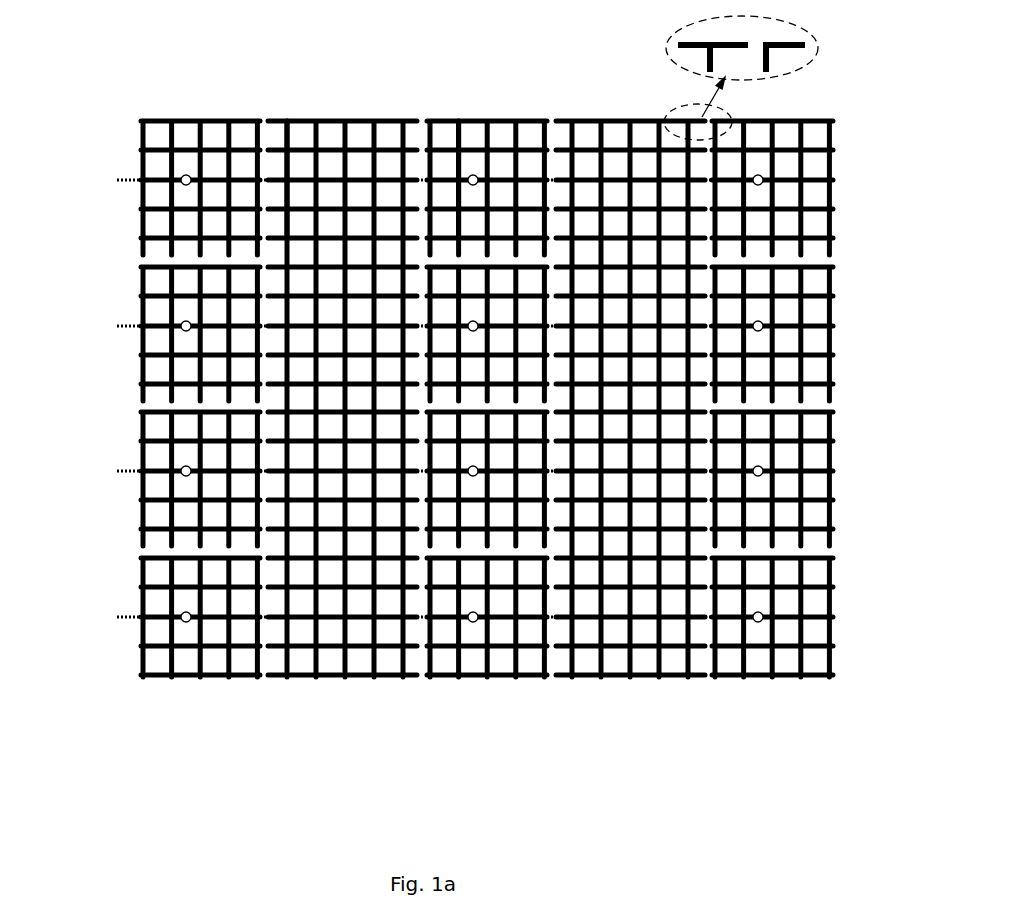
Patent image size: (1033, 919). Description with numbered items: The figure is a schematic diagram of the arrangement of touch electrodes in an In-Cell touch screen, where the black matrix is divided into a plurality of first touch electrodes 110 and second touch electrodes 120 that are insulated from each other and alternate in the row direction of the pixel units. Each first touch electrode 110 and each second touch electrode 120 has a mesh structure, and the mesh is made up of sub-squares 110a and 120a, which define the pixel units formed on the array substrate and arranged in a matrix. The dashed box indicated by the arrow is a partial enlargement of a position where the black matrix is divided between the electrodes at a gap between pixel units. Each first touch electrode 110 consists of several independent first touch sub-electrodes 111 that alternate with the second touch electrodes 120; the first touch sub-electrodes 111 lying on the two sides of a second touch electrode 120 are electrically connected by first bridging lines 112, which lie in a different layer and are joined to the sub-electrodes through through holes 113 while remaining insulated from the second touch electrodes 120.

The first touch electrode 110 is at (487, 486).
The sub-square 110a is at (302, 138).
The first touch sub-electrode 111 is at (660, 802).
The first bridging line 112 is at (122, 617).
The through hole 113 is at (186, 620).
The second touch electrode 120 is at (632, 120).
The sub-square 120a is at (473, 135).